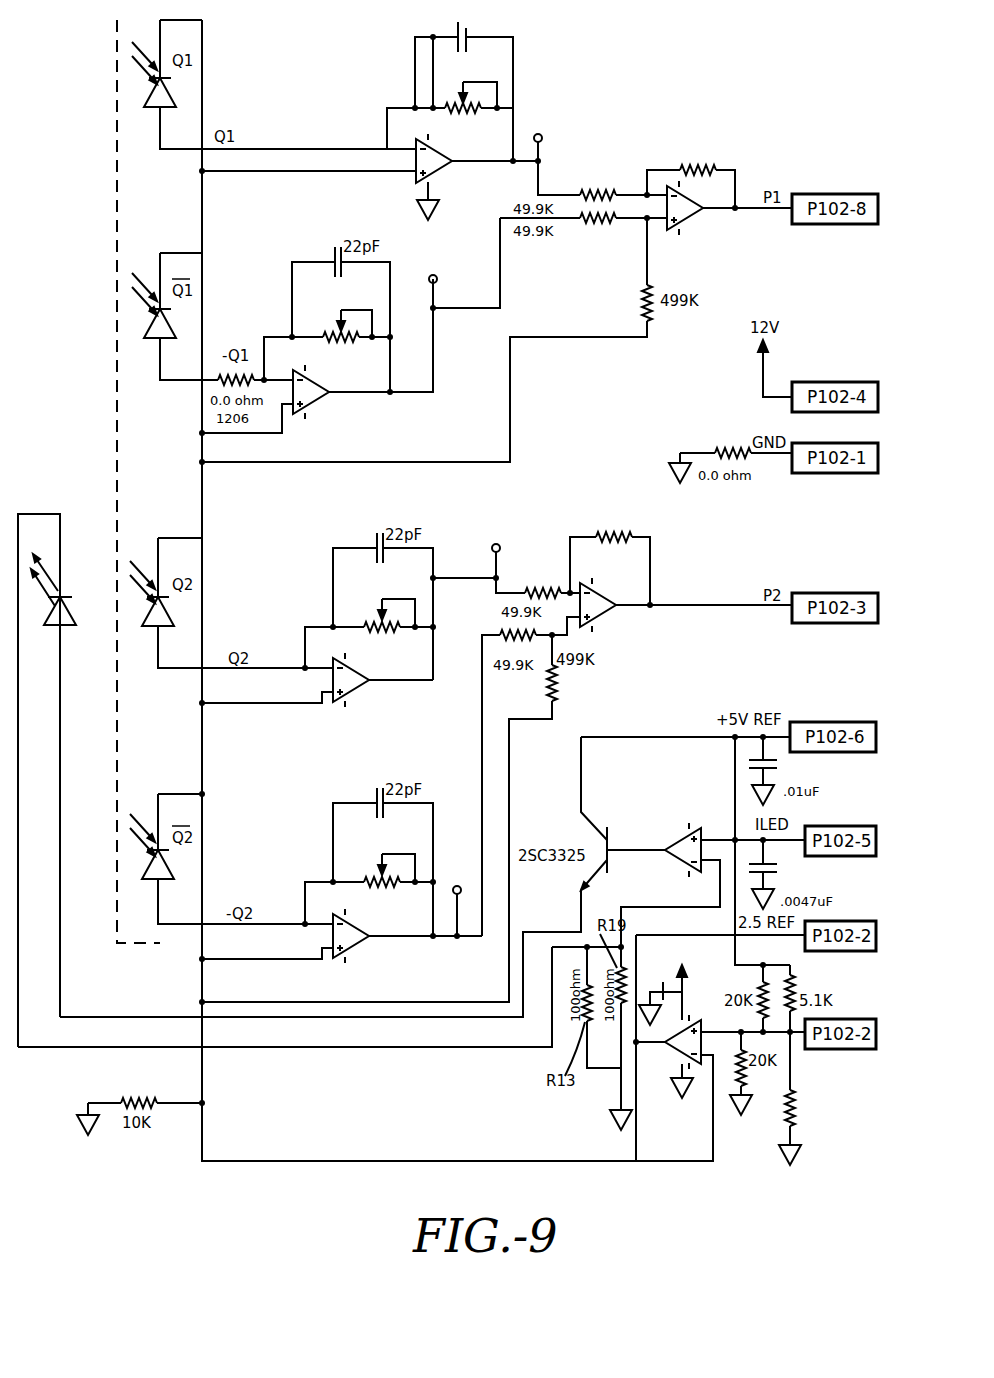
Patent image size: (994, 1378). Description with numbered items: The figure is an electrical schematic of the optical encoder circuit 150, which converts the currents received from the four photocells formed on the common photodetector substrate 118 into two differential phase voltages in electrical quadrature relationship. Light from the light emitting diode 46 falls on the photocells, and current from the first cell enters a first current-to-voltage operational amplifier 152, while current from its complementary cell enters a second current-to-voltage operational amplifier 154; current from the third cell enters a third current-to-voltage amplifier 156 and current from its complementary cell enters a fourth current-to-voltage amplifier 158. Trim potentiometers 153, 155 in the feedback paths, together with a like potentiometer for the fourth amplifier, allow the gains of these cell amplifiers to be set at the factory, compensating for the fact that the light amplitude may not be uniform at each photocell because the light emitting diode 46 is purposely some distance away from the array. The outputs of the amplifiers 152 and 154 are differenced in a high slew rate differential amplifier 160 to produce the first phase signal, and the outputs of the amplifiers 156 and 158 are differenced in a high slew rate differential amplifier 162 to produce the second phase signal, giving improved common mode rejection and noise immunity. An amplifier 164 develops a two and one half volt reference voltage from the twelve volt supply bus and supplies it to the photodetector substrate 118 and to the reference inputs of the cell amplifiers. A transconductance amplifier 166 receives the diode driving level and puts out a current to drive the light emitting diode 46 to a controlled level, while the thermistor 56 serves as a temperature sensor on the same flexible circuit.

The LED 46 is at (55, 625).
The thermistor 56 is at (792, 1112).
The photodetector substrate 118 is at (103, 960).
The optical encoder circuit 150 is at (147, 1197).
The first current-to-voltage operational amplifier 152 is at (440, 172).
The trim potentiometer 153 is at (475, 100).
The second current-to-voltage operational amplifier 154 is at (318, 404).
The trim potentiometer 155 is at (331, 330).
The third current-to-voltage amplifier 156 is at (356, 692).
The fourth current-to-voltage amplifier 158 is at (355, 932).
The high slew rate differential amplifier 160 is at (672, 192).
The high slew rate differential amplifier 162 is at (607, 592).
The amplifier 164 is at (670, 1022).
The transconductance amplifier 166 is at (696, 830).